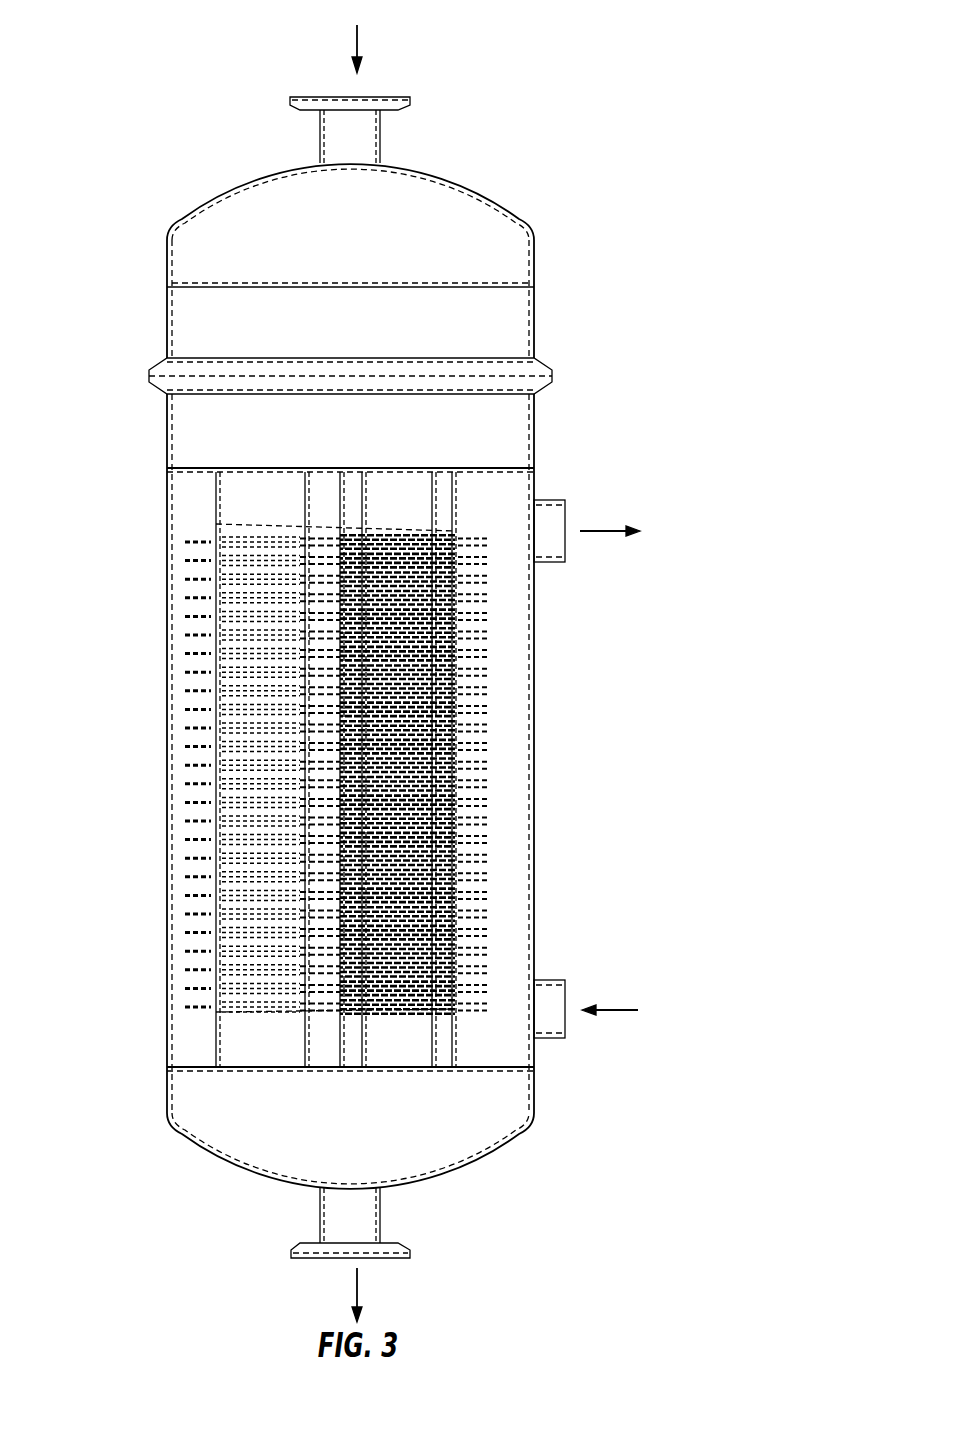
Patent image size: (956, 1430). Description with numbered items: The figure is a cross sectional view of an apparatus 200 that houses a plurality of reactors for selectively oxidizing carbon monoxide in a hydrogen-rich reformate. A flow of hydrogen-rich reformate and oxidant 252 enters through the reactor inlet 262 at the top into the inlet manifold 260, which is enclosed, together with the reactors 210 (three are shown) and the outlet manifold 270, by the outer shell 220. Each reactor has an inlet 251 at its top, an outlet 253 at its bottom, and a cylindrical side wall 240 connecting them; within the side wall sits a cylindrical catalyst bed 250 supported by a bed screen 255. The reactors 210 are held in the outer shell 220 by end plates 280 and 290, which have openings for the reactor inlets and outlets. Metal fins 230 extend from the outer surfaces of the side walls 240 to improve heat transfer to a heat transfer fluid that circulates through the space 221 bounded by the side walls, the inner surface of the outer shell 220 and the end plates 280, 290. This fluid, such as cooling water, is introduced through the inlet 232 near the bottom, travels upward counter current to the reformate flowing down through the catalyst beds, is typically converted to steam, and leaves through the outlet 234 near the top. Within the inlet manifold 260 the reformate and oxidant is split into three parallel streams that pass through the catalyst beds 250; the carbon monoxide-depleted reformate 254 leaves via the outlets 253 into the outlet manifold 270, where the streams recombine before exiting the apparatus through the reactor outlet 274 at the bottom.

The apparatus 200 is at (655, 256).
The reactors 210 is at (185, 832).
The outer shell 220 is at (167, 515).
The space 221 is at (520, 767).
The metal fins 230 is at (185, 614).
The inlet 232 is at (558, 978).
The outlet 234 is at (555, 500).
The cylindrical side wall 240 is at (225, 1062).
The cylindrical catalyst bed 250 is at (418, 510).
The inlet 251 is at (259, 445).
The flow of hydrogen-rich reformate and oxidant 252 is at (357, 48).
The outlet 253 is at (226, 1079).
The carbon monoxide-depleted reformate 254 is at (358, 1288).
The bed screen 255 is at (412, 1070).
The inlet manifold 260 is at (328, 238).
The reactor inlet 262 is at (380, 143).
The outlet manifold 270 is at (373, 1142).
The reactor outlet 274 is at (380, 1228).
The end plate 280 is at (512, 468).
The end plate 290 is at (518, 1072).